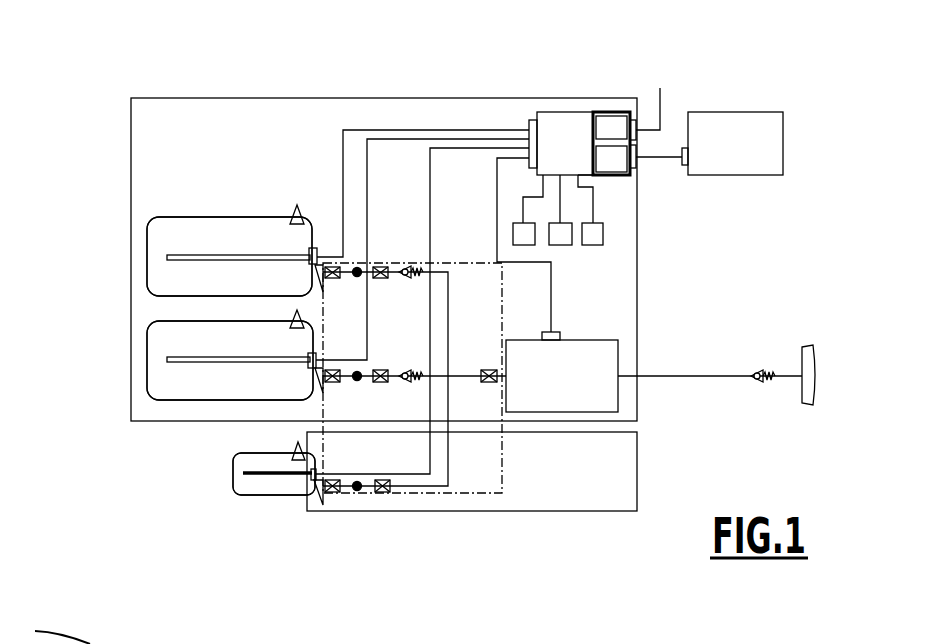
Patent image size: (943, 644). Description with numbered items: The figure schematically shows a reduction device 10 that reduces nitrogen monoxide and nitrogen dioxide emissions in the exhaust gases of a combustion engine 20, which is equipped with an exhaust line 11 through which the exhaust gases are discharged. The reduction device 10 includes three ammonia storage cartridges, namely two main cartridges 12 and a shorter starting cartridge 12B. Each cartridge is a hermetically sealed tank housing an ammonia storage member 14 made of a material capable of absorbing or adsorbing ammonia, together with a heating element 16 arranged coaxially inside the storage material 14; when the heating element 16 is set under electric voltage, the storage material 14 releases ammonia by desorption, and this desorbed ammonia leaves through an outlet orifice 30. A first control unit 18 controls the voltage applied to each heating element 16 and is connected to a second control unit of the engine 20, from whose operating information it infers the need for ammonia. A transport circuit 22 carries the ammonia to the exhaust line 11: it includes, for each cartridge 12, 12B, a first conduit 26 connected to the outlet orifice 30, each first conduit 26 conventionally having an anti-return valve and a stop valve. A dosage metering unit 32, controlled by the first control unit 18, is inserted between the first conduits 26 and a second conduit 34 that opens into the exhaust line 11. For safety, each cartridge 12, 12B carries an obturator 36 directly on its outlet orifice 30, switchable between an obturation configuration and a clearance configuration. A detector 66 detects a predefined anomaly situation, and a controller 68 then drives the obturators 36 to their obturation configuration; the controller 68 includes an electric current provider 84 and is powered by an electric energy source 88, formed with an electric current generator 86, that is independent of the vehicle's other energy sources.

The reduction device 10 is at (94, 94).
The exhaust line 11 is at (813, 358).
The main cartridge 12 is at (138, 263).
The starting cartridge 12B is at (220, 478).
The ammonia storage member 14 is at (192, 236).
The heating element 16 is at (250, 256).
The first control unit 18 is at (558, 126).
The combustion engine 20 is at (741, 117).
The transport circuit 22 is at (394, 522).
The first conduit 26 is at (440, 260).
The outlet orifice 30 is at (331, 240).
The dosage metering unit 32 is at (573, 421).
The second conduit 34 is at (703, 374).
The obturator 36 is at (383, 250).
The detector 66 is at (610, 123).
The controller 68 is at (607, 189).
The electric current provider 84 is at (528, 210).
The electric current generator 86 is at (560, 210).
The electric energy source 88 is at (590, 210).